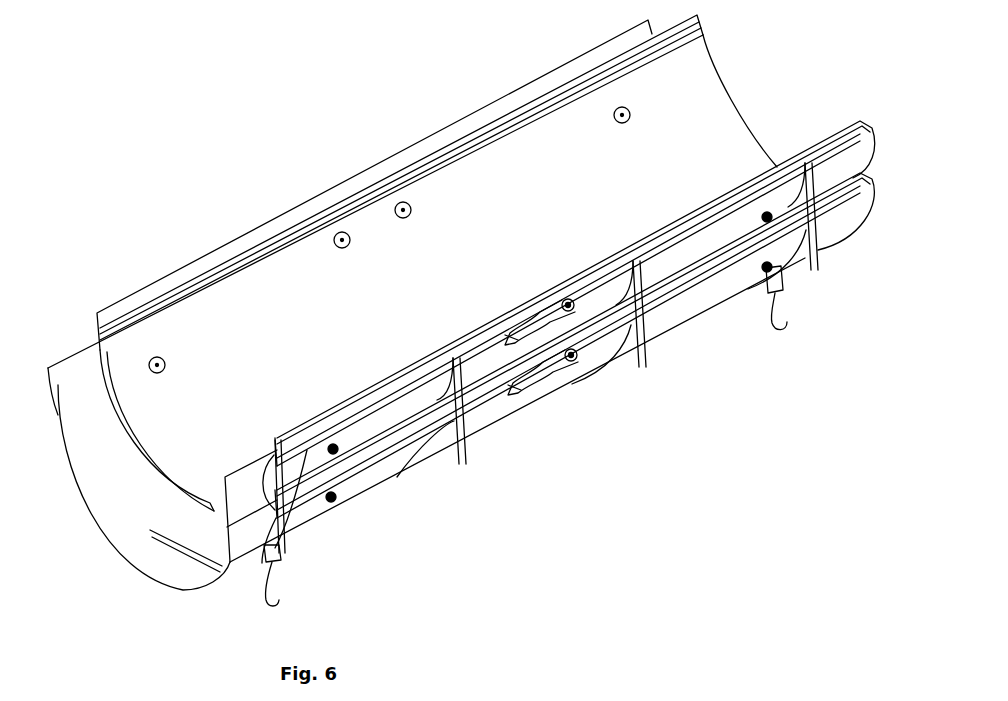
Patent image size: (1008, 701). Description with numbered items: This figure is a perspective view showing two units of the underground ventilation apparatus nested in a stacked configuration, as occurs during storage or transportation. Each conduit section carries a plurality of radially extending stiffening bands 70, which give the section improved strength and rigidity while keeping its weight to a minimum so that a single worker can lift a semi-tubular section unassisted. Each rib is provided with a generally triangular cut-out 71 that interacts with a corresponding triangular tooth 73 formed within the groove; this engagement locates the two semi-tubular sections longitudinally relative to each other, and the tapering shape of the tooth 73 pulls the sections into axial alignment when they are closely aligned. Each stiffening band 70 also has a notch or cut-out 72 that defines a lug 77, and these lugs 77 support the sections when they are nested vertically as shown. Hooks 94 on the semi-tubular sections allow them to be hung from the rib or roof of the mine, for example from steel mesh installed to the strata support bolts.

The stiffening band 70 is at (447, 470).
The cut-out 71 is at (816, 138).
The notch or cut-out 72 is at (806, 264).
The tooth 73 is at (633, 40).
The lug 77 is at (816, 258).
The hook 94 is at (280, 600).